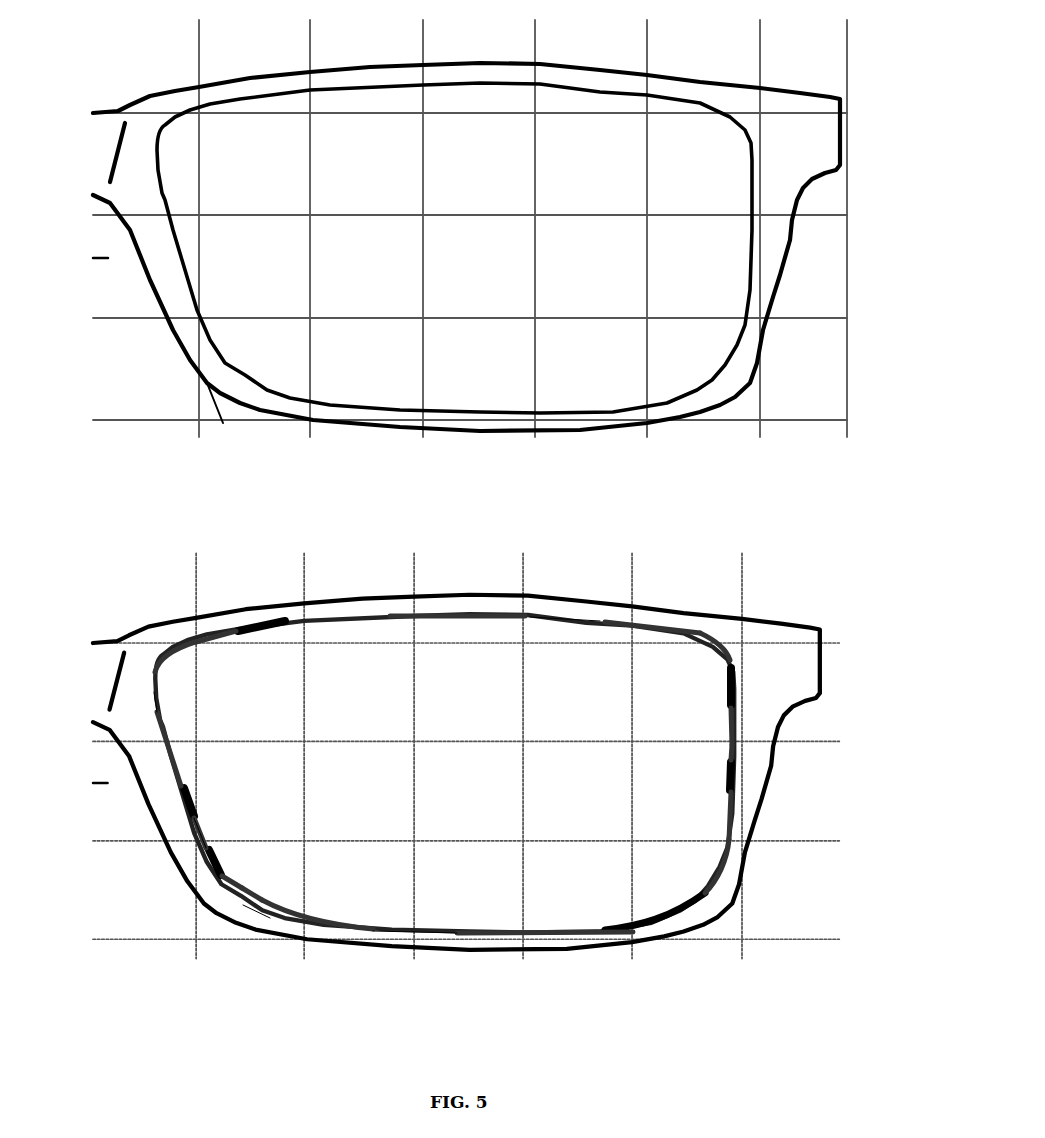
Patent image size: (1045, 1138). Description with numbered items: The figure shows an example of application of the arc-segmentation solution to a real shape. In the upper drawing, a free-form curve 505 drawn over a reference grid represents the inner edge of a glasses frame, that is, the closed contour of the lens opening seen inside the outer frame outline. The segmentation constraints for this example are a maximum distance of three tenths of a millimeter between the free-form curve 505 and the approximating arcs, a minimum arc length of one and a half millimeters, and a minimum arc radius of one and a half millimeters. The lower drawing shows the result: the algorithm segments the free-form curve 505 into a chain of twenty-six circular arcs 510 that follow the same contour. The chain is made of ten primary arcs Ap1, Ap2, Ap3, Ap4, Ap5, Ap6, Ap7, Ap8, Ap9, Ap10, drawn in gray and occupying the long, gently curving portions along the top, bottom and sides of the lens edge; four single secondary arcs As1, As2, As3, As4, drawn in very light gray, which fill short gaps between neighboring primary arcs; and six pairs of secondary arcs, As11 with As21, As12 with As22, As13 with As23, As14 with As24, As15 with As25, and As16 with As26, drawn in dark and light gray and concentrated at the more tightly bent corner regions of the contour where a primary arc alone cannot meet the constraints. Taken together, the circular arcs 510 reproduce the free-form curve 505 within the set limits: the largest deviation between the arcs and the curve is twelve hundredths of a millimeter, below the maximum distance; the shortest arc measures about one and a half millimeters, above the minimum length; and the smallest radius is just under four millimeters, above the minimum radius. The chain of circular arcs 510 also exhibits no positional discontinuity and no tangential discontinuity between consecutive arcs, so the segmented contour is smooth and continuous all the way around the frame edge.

The free-form curve 505 is at (648, 95).
The circular arcs 510 is at (700, 548).
The secondary arc of first pair As11 is at (188, 805).
The secondary arc of second pair As12 is at (220, 863).
The secondary arc of third pair As13 is at (683, 938).
The secondary arc of fourth pair As14 is at (740, 780).
The secondary arc of fifth pair As15 is at (742, 688).
The secondary arc of sixth pair As16 is at (270, 620).
The secondary arc of first pair As21 is at (198, 838).
The secondary arc of second pair As22 is at (238, 882).
The secondary arc of third pair As23 is at (708, 897).
The secondary arc of fourth pair As24 is at (740, 755).
The secondary arc of fifth pair As25 is at (733, 647).
The secondary arc of sixth pair As26 is at (217, 630).
The primary arc Ap1 is at (167, 647).
The primary arc Ap2 is at (165, 730).
The primary arc Ap3 is at (208, 840).
The primary arc Ap4 is at (252, 897).
The primary arc Ap5 is at (322, 918).
The primary arc Ap6 is at (550, 937).
The primary arc Ap7 is at (720, 852).
The primary arc Ap8 is at (738, 722).
The primary arc Ap9 is at (668, 628).
The primary arc Ap10 is at (418, 612).
The single secondary arc As1 is at (158, 712).
The single secondary arc As2 is at (263, 917).
The single secondary arc As3 is at (413, 933).
The single secondary arc As4 is at (568, 620).